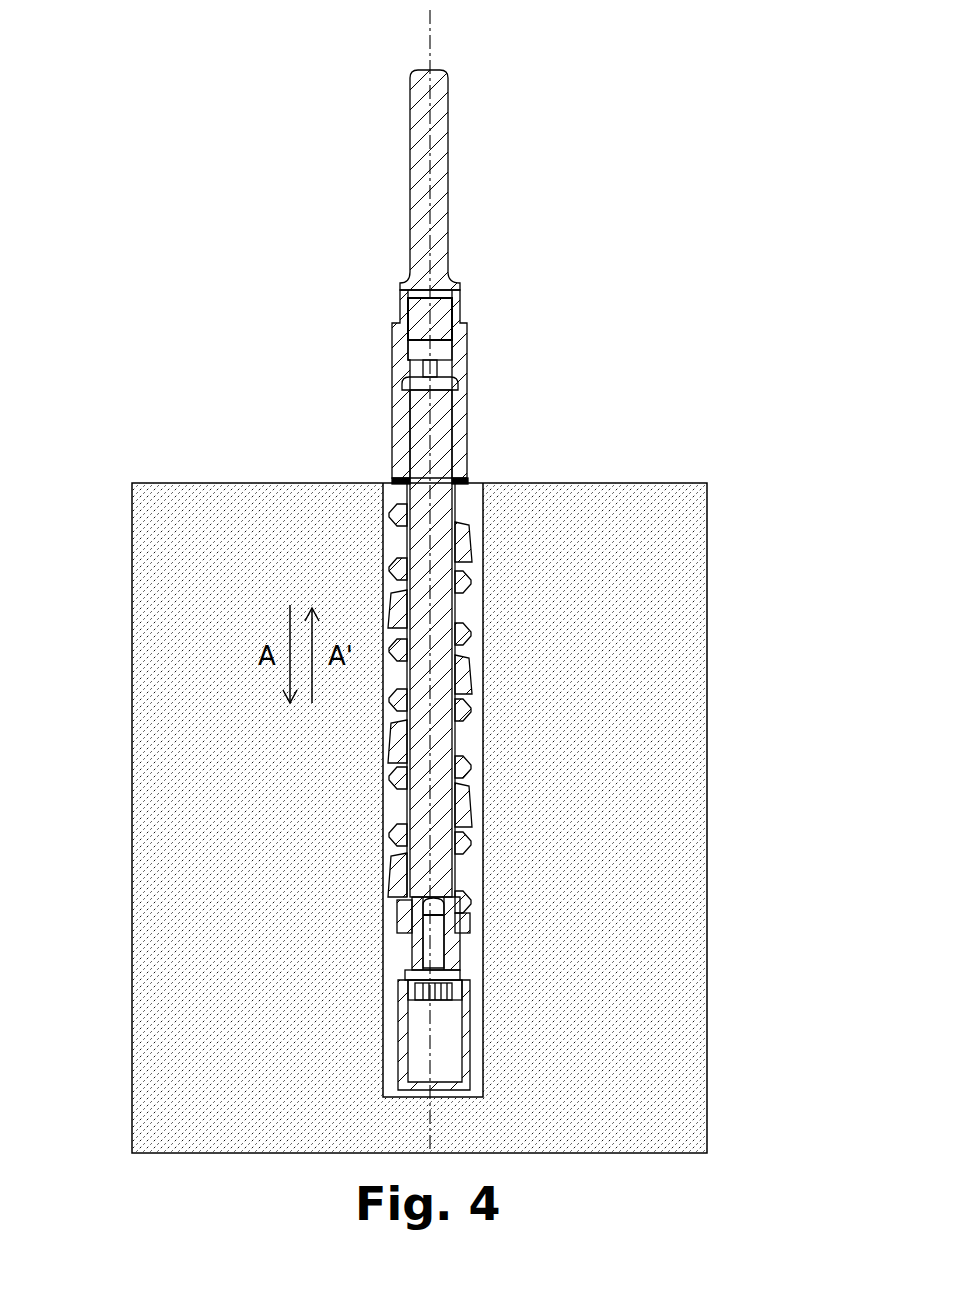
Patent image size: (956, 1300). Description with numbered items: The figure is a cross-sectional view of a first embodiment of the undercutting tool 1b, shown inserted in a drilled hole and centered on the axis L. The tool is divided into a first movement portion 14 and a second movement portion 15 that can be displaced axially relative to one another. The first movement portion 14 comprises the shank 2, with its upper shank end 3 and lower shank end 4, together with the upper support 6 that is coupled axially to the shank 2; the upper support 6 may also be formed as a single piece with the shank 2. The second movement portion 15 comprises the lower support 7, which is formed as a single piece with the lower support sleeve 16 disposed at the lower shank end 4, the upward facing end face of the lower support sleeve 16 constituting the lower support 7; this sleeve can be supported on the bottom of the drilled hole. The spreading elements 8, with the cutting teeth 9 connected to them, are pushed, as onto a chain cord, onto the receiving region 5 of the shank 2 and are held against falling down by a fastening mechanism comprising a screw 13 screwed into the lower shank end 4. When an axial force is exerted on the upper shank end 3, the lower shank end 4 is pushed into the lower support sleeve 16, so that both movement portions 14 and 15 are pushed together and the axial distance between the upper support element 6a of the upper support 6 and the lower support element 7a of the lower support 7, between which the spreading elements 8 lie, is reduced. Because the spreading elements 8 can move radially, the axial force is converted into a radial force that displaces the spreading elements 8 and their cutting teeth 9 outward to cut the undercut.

The undercutting tool 1b is at (158, 84).
The longitudinal axis L is at (430, 45).
The shank 2 is at (542, 179).
The upper shank end 3 is at (383, 158).
The lower shank end 4 is at (378, 952).
The receiving region 5 is at (483, 483).
The upper support 6 is at (462, 470).
The upper support element 6a is at (395, 490).
The lower support 7 is at (470, 940).
The lower support element 7a is at (397, 912).
The spreading elements 8 is at (478, 542).
The cutting teeth 9 is at (395, 515).
The screw 13 is at (400, 963).
The first movement portion 14 is at (257, 68).
The second movement portion 15 is at (223, 898).
The lower support sleeve 16 is at (465, 955).